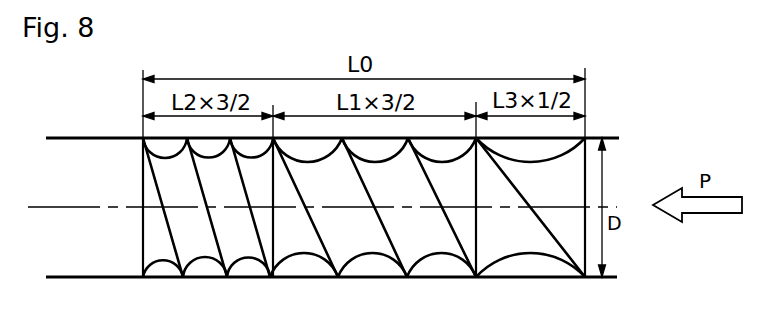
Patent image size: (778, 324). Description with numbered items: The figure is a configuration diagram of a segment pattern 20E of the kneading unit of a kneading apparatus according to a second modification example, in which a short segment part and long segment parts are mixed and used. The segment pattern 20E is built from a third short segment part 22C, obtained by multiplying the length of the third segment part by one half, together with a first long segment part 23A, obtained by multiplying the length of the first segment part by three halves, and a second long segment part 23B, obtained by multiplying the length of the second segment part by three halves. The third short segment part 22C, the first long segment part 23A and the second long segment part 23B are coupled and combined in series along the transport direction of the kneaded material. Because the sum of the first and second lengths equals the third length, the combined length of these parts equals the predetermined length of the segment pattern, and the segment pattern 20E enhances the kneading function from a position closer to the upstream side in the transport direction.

The segment pattern 20E is at (634, 129).
The second long segment part 23B is at (203, 255).
The first long segment part 23A is at (382, 257).
The third short segment part 22C is at (547, 255).